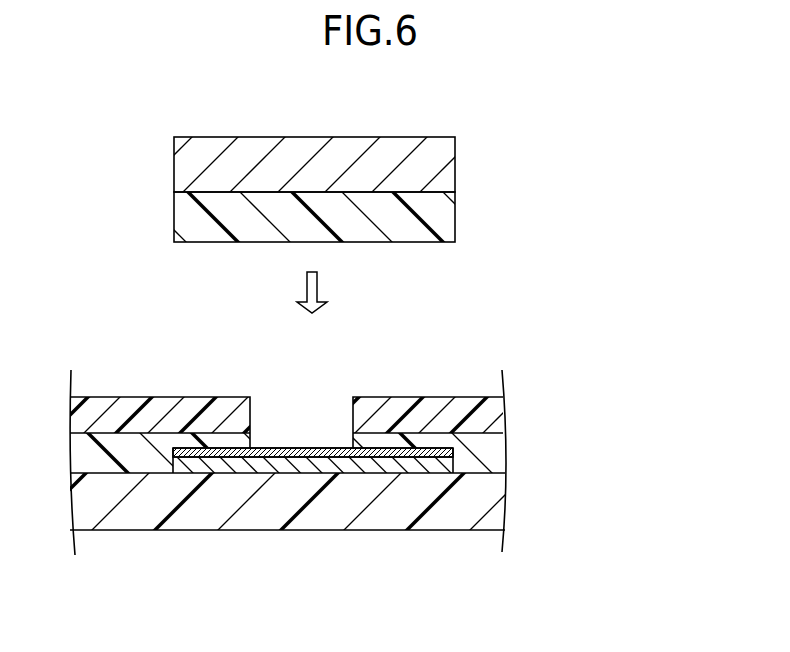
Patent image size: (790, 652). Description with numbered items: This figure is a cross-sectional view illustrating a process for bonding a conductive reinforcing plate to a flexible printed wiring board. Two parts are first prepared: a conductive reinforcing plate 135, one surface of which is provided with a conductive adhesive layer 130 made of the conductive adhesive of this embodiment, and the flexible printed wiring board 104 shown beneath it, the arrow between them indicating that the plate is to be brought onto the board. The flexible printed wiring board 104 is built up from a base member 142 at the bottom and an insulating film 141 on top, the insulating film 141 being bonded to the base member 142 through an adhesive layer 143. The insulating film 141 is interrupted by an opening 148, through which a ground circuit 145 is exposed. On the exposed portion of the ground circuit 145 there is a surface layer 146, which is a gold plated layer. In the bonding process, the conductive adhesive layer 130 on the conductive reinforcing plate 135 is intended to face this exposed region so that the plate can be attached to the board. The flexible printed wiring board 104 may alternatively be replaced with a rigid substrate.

The conductive reinforcing plate 135 is at (456, 163).
The conductive adhesive layer 130 is at (456, 219).
The opening 148 is at (303, 412).
The insulating film 141 is at (503, 413).
The surface layer 146 is at (488, 434).
The ground circuit 145 is at (455, 452).
The adhesive layer 143 is at (507, 470).
The base member 142 is at (507, 510).
The flexible printed wiring board 104 is at (602, 398).